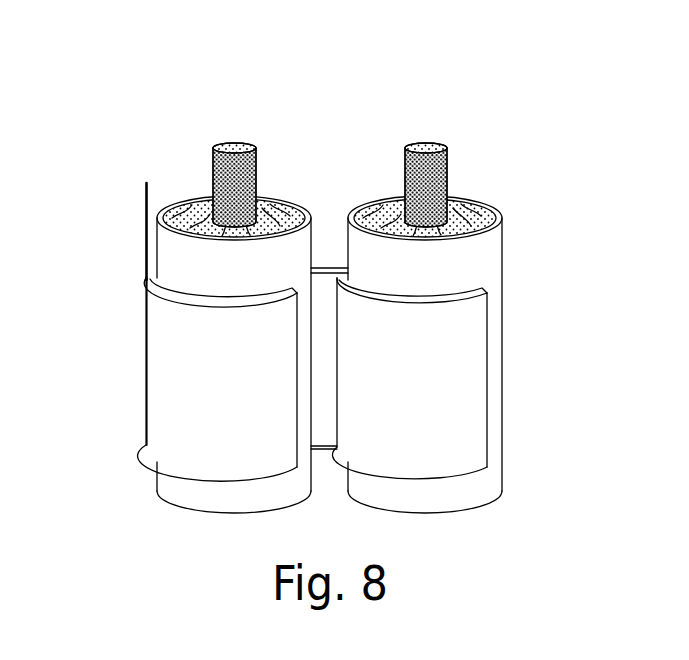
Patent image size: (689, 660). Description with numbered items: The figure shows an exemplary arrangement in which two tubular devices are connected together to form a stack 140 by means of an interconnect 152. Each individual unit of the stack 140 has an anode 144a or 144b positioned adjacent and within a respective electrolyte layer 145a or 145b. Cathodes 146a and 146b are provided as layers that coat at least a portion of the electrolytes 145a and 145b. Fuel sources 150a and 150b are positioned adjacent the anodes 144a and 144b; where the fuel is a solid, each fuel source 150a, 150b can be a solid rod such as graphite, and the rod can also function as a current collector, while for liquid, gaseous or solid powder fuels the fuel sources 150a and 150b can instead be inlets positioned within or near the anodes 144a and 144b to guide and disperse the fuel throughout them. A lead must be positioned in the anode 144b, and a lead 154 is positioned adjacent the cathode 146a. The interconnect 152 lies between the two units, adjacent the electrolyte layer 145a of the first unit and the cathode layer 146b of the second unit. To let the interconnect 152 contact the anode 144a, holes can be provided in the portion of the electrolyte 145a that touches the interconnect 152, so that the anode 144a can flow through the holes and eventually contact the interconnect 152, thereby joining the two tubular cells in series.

The stack 140 is at (349, 137).
The anode 144a is at (202, 205).
The anode 144b is at (462, 210).
The electrolyte layer 145a is at (305, 242).
The electrolyte layer 145b is at (500, 242).
The cathode 146a is at (160, 387).
The cathode 146b is at (467, 368).
The fuel source 150a is at (228, 145).
The fuel source 150b is at (432, 145).
The interconnect 152 is at (323, 268).
The lead 154 is at (146, 215).